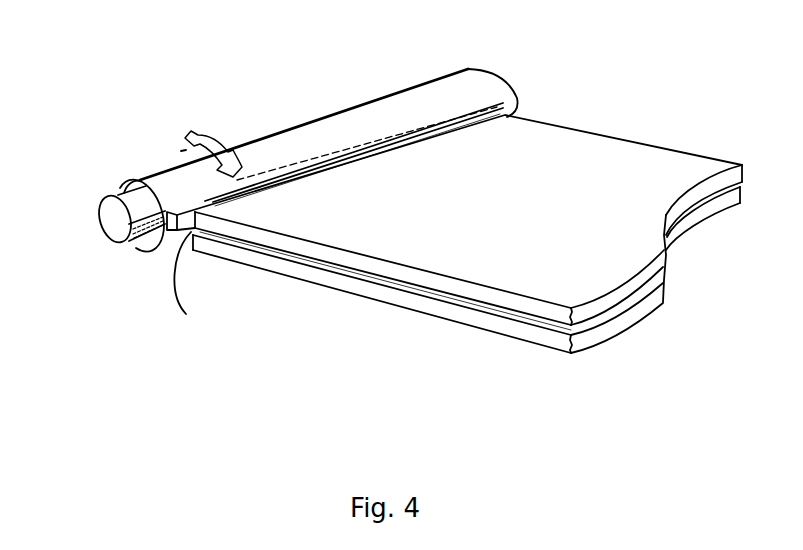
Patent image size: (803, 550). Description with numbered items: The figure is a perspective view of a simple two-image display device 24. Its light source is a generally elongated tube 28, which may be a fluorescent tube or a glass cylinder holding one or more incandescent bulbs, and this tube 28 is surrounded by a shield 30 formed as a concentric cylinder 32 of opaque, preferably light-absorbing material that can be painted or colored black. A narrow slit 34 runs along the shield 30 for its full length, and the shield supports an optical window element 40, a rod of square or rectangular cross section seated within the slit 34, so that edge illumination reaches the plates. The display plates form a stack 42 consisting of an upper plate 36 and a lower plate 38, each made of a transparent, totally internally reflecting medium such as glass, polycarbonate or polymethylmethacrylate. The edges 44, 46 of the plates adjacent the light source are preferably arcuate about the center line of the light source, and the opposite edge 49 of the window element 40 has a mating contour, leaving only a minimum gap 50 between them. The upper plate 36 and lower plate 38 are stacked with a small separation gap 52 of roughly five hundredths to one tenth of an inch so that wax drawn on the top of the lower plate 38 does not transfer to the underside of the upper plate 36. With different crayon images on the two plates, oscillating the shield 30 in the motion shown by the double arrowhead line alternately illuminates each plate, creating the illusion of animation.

The two-image display device 24 is at (530, 355).
The elongated tube 28 is at (120, 190).
The shield 30 is at (470, 82).
The concentric cylinder 32 is at (145, 247).
The narrow slit 34 is at (170, 212).
The upper plate 36 is at (610, 150).
The lower plate 38 is at (423, 307).
The optical window element 40 is at (347, 157).
The stack 42 is at (693, 231).
The edge of plate 44 is at (185, 286).
The edge of plate 46 is at (207, 218).
The opposite edge of light window element 49 is at (190, 222).
The minimum gap 50 is at (287, 183).
The separation gap 52 is at (320, 265).